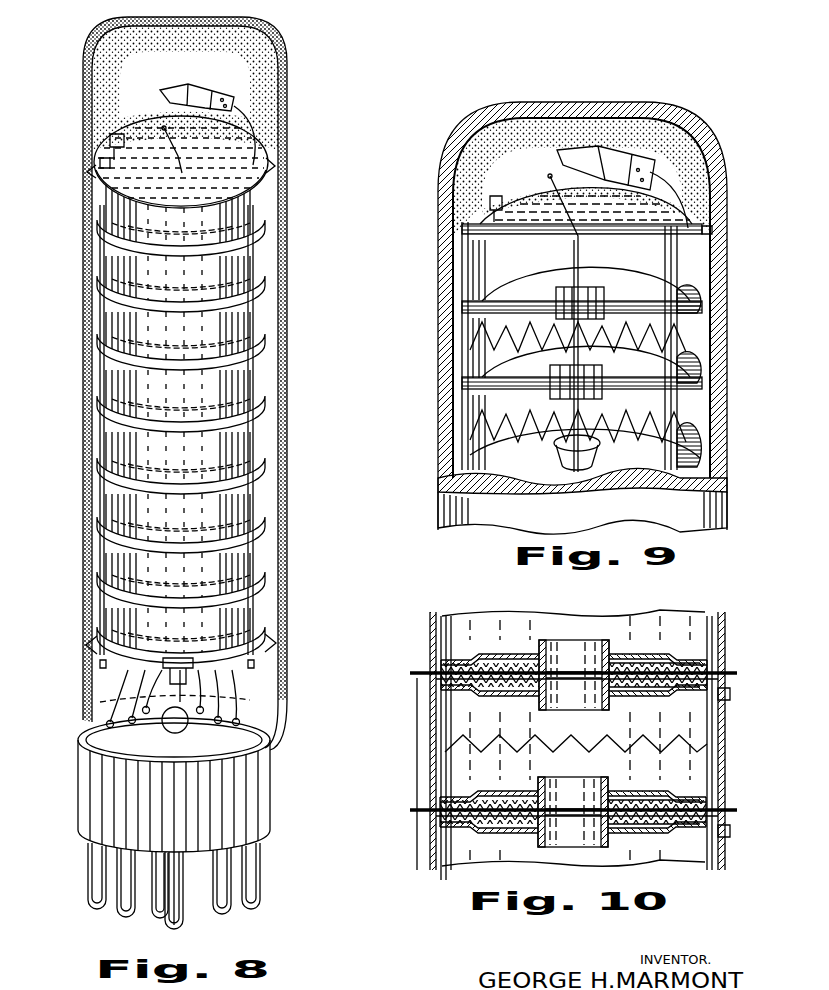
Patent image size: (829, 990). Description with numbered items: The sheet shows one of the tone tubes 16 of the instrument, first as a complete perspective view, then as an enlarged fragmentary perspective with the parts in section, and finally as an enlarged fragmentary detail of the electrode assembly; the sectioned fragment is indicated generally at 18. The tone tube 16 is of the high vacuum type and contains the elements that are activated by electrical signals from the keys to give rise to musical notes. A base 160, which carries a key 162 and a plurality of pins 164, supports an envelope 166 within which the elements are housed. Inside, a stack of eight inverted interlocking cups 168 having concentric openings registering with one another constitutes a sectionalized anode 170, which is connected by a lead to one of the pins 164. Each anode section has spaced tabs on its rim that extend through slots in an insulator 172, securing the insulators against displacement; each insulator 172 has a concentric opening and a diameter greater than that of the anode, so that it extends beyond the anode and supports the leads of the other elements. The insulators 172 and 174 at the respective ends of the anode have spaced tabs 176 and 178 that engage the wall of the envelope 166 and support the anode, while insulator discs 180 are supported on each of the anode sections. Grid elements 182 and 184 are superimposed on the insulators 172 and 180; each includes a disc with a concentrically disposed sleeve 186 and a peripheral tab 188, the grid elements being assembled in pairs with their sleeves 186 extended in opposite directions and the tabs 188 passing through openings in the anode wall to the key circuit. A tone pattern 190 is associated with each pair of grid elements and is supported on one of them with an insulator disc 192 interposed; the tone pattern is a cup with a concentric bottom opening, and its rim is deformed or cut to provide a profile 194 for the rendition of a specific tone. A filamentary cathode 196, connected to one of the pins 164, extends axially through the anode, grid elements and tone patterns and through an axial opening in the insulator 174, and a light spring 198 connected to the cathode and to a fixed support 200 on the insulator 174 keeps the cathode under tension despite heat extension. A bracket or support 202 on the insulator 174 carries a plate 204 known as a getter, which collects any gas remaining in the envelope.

In FIG. 8, the tone tube 16 is at (83, 464).
In FIG. 9, the electron tube envelope section 18 is at (438, 370).
In FIG. 8, the base 160 is at (82, 770).
In FIG. 8, the key 162 is at (158, 910).
In FIG. 8, the pins 164 is at (88, 898).
In FIG. 8, the envelope 166 is at (284, 530).
In FIG. 9, the envelope 166 is at (727, 383).
In FIG. 8, the inverted interlocking cups 168 is at (100, 335).
In FIG. 10, the inverted interlocking cups 168 is at (430, 622).
In FIG. 8, the sectionalized anode 170 is at (110, 355).
In FIG. 9, the sectionalized anode 170 is at (485, 258).
In FIG. 10, the sectionalized anode 170 is at (430, 867).
In FIG. 8, the insulator 172 is at (253, 407).
In FIG. 9, the insulator 172 is at (700, 302).
In FIG. 10, the insulator 172 is at (725, 680).
In FIG. 8, the insulator 174 is at (262, 183).
In FIG. 9, the insulator 174 is at (673, 217).
In FIG. 8, the tabs 176 is at (264, 632).
In FIG. 8, the tabs 178 is at (100, 166).
In FIG. 9, the tabs 178 is at (712, 226).
In FIG. 10, the insulator discs 180 is at (724, 697).
In FIG. 10, the grid element 182 is at (672, 692).
In FIG. 10, the grid element 184 is at (662, 662).
In FIG. 10, the sleeve 186 is at (575, 647).
In FIG. 10, the peripheral tab 188 is at (410, 673).
In FIG. 9, the tone pattern 190 is at (672, 347).
In FIG. 10, the tone pattern 190 is at (478, 618).
In FIG. 10, the insulator disc 192 is at (617, 660).
In FIG. 9, the profile 194 is at (510, 420).
In FIG. 10, the profile 194 is at (602, 740).
In FIG. 9, the filamentary cathode 196 is at (580, 430).
In FIG. 8, the light spring 198 is at (162, 127).
In FIG. 9, the light spring 198 is at (548, 180).
In FIG. 8, the fixed support 200 is at (110, 140).
In FIG. 9, the fixed support 200 is at (497, 198).
In FIG. 8, the bracket or support 202 is at (250, 140).
In FIG. 9, the bracket or support 202 is at (670, 190).
In FIG. 8, the plate 204 is at (232, 101).
In FIG. 9, the plate 204 is at (622, 160).